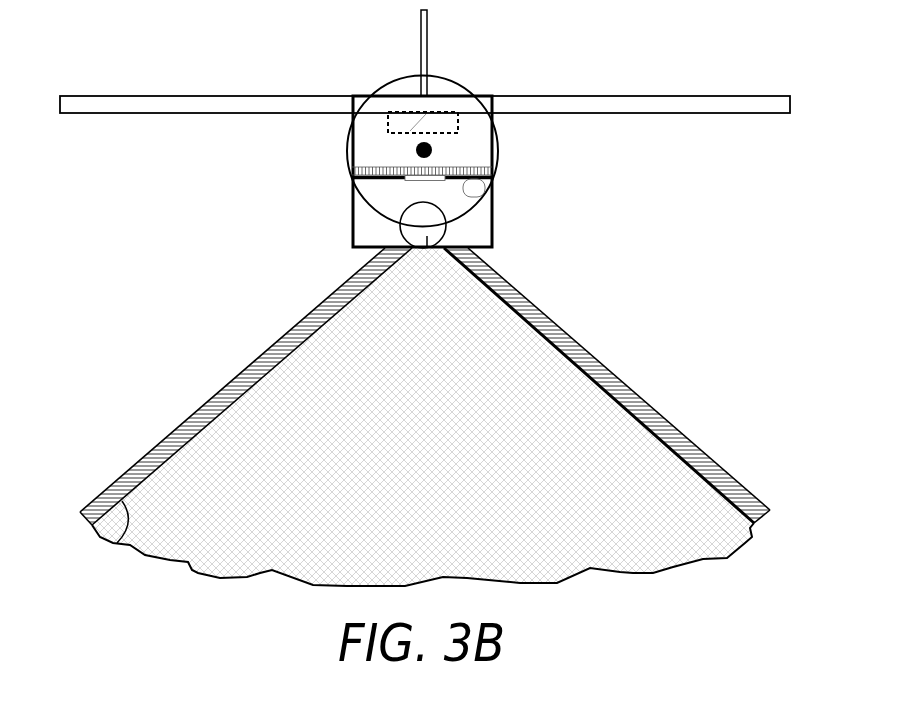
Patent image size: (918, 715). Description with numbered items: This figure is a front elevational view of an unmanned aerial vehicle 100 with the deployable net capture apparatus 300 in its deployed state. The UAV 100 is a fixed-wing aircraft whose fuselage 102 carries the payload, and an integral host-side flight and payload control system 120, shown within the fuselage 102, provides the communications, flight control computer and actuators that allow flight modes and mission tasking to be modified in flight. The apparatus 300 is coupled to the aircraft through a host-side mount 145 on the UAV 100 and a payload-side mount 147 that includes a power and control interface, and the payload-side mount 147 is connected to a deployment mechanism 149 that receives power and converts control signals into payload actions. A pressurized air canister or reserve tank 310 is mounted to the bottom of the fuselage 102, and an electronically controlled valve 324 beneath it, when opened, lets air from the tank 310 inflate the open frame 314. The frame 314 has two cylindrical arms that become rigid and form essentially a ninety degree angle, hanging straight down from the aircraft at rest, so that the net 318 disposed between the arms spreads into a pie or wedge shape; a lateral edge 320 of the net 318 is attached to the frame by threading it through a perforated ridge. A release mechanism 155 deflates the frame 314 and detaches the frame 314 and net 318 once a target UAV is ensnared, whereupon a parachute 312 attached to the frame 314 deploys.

The unmanned aerial vehicle 100 is at (361, 28).
The fuselage 102 is at (347, 166).
The host-side flight and payload control system 120 is at (458, 132).
The host-side mount 145 is at (477, 172).
The payload-side mount 147 is at (352, 181).
The deployment mechanism 149 is at (498, 173).
The release mechanism 155 is at (403, 179).
The deployable net capture apparatus 300 is at (299, 255).
The pressurized air canister or reserve tank 310 is at (493, 220).
The parachute 312 is at (492, 190).
The inflatable open frame 314 is at (148, 452).
The net 318 is at (697, 563).
The lateral edge of the net 320 is at (119, 542).
The electronically controlled valve 324 is at (430, 247).